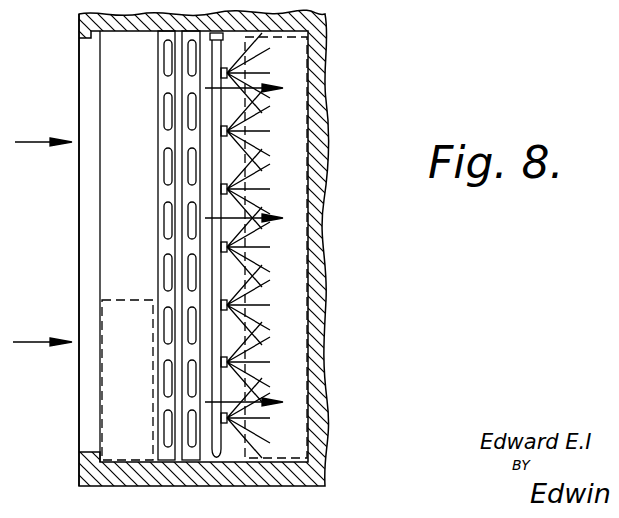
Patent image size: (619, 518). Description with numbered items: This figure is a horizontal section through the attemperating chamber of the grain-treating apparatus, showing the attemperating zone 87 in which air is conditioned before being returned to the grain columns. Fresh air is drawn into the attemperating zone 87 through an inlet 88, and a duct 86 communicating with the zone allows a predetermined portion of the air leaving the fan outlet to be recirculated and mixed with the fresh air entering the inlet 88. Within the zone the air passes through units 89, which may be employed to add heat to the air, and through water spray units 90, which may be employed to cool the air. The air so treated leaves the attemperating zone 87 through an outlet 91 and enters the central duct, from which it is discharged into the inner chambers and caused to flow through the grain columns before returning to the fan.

The duct 86 is at (102, 368).
The attemperating zone 87 is at (142, 250).
The inlet 88 is at (92, 78).
The units 89 is at (193, 167).
The water spray units 90 is at (224, 184).
The outlet 91 is at (264, 38).